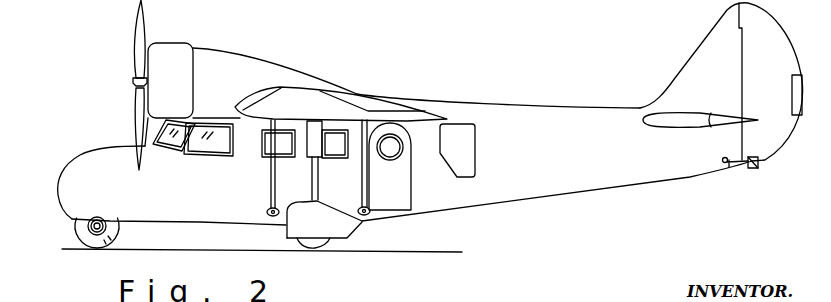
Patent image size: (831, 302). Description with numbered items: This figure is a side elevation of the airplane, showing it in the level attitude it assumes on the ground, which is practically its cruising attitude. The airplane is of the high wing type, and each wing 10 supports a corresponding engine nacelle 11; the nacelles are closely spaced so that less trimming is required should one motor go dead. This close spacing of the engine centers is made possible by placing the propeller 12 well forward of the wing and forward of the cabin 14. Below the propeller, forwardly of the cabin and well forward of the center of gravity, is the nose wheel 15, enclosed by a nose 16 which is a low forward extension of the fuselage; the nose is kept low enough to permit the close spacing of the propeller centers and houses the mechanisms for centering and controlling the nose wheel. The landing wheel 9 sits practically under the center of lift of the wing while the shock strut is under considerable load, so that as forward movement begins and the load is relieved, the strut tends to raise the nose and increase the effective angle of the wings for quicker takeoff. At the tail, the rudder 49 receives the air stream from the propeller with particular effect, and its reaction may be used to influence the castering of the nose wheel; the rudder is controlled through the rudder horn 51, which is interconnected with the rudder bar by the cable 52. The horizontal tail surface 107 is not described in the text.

The landing wheel 9 is at (348, 242).
The wing 10 is at (320, 104).
The engine nacelle 11 is at (249, 70).
The propeller 12 is at (137, 119).
The cabin 14 is at (249, 173).
The nose wheel 15 is at (118, 235).
The nose 16 is at (111, 182).
The rudder 49 is at (787, 65).
The rudder horn 51 is at (757, 170).
The cable 52 is at (730, 165).
The horizontal stabilizer 107 is at (738, 110).